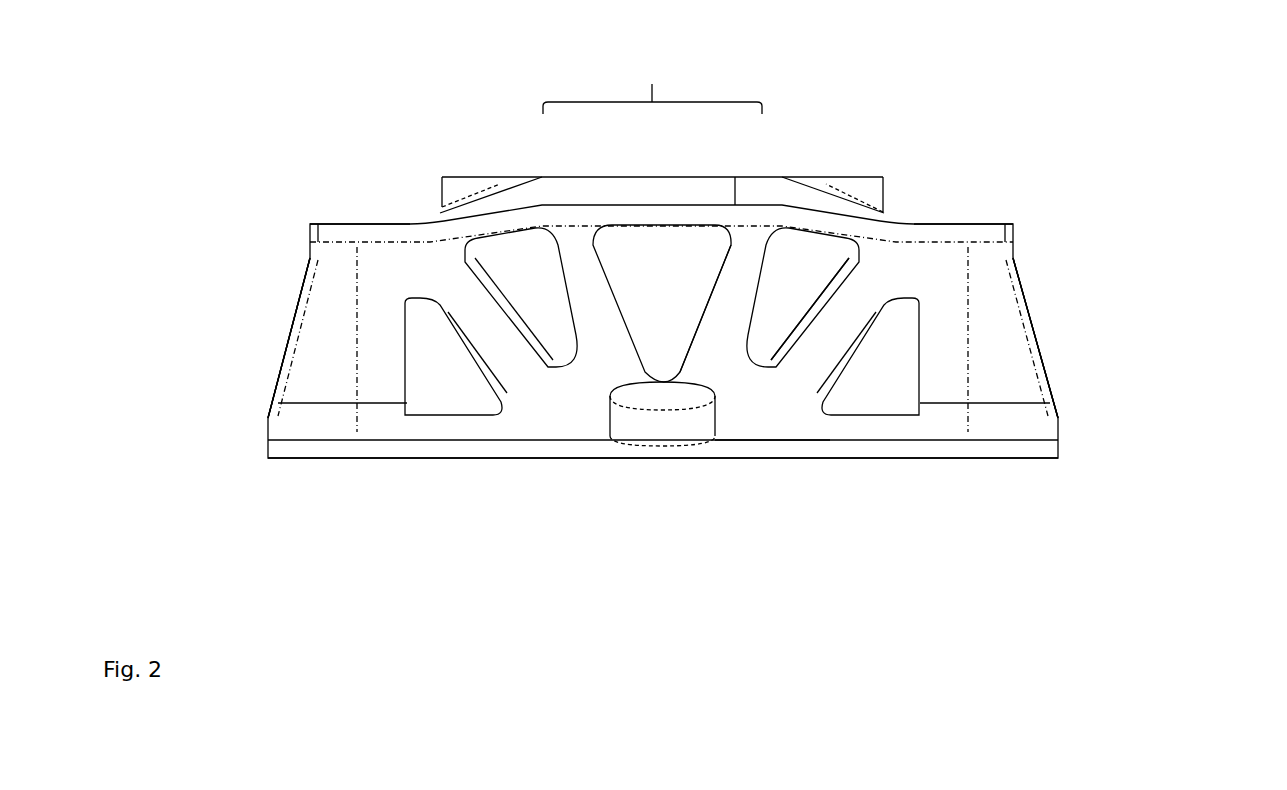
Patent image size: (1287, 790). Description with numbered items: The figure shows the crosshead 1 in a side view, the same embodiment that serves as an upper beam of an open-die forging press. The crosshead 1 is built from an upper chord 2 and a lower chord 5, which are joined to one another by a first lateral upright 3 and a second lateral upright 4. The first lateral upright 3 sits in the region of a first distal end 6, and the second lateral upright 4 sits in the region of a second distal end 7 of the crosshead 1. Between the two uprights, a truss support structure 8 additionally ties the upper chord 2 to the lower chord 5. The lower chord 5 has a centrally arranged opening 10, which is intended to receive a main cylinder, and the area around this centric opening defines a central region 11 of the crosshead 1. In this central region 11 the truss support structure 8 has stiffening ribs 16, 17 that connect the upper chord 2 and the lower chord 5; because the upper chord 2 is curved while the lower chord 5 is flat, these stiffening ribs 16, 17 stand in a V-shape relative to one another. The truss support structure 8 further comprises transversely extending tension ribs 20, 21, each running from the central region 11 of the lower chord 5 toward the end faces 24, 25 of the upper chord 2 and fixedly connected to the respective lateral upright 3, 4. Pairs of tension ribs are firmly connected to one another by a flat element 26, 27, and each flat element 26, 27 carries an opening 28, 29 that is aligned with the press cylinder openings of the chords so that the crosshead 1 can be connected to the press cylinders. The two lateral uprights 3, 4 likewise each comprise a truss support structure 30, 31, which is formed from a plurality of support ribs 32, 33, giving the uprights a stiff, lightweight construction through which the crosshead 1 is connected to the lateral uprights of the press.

The crosshead 1 is at (250, 486).
The upper chord 2 is at (836, 174).
The first lateral upright 3 is at (297, 380).
The second lateral upright 4 is at (1012, 376).
The lower chord 5 is at (516, 461).
The first distal end 6 is at (297, 314).
The second distal end 7 is at (1040, 343).
The truss support structure 8 is at (757, 417).
The opening 10 is at (623, 418).
The central region 11 is at (652, 84).
The stiffening rib 16 is at (590, 303).
The stiffening rib 17 is at (735, 317).
The tension rib 20 is at (472, 323).
The tension rib 21 is at (840, 350).
The end face 24 is at (310, 243).
The end face 25 is at (1015, 248).
The flat element 26 is at (483, 357).
The flat element 27 is at (843, 330).
The opening 28 is at (543, 345).
The opening 29 is at (875, 325).
The truss support structure 30 is at (303, 287).
The truss support structure 31 is at (1037, 321).
The support rib 32 is at (289, 338).
The support rib 33 is at (1035, 338).